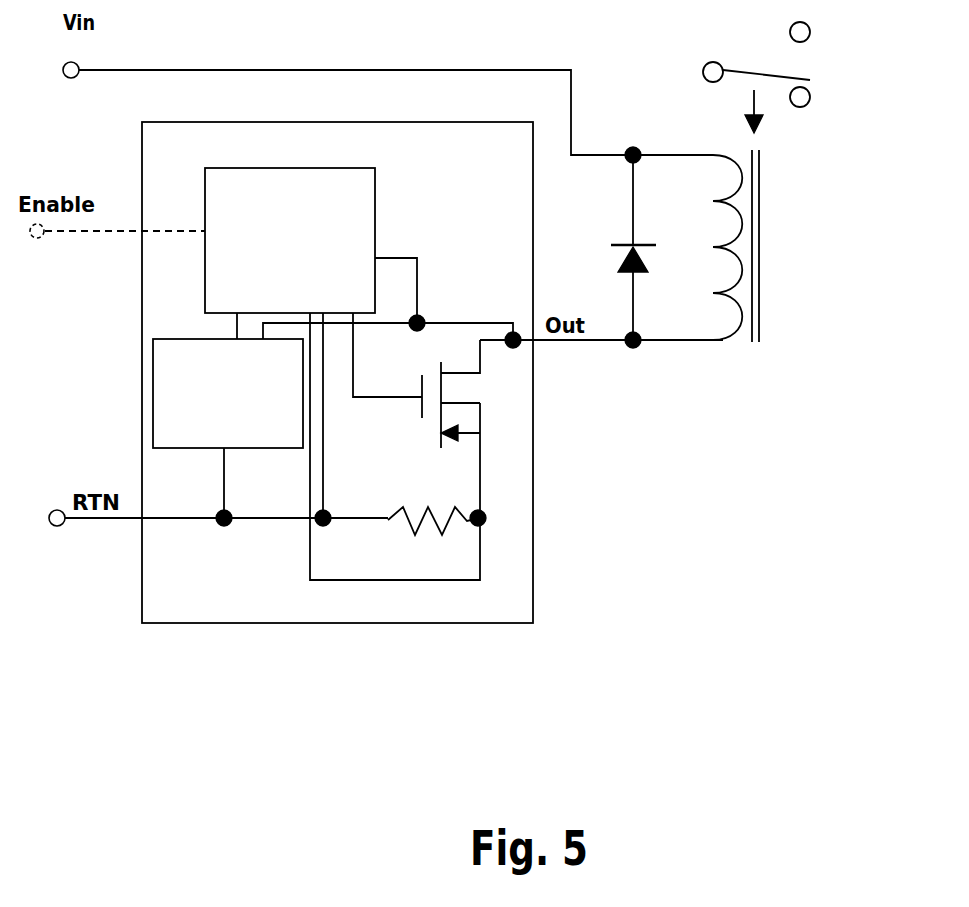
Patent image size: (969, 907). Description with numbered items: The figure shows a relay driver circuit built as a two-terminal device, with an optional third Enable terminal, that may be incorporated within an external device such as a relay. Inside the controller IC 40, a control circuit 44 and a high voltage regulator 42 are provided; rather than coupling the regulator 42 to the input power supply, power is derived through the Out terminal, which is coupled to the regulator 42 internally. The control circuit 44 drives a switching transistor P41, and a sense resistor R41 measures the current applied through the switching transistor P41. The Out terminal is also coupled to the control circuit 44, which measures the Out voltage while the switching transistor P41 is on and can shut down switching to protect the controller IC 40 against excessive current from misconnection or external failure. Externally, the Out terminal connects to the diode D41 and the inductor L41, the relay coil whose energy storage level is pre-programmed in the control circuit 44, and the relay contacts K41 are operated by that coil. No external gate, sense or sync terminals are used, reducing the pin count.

The controller IC 40 is at (337, 372).
The high voltage regulator 42 is at (228, 393).
The control circuit 44 is at (290, 240).
The switching transistor P41 is at (442, 396).
The sense resistor R41 is at (437, 509).
The freewheeling diode D41 is at (611, 247).
The inductor L41 is at (713, 246).
The relay contacts K41 is at (799, 87).